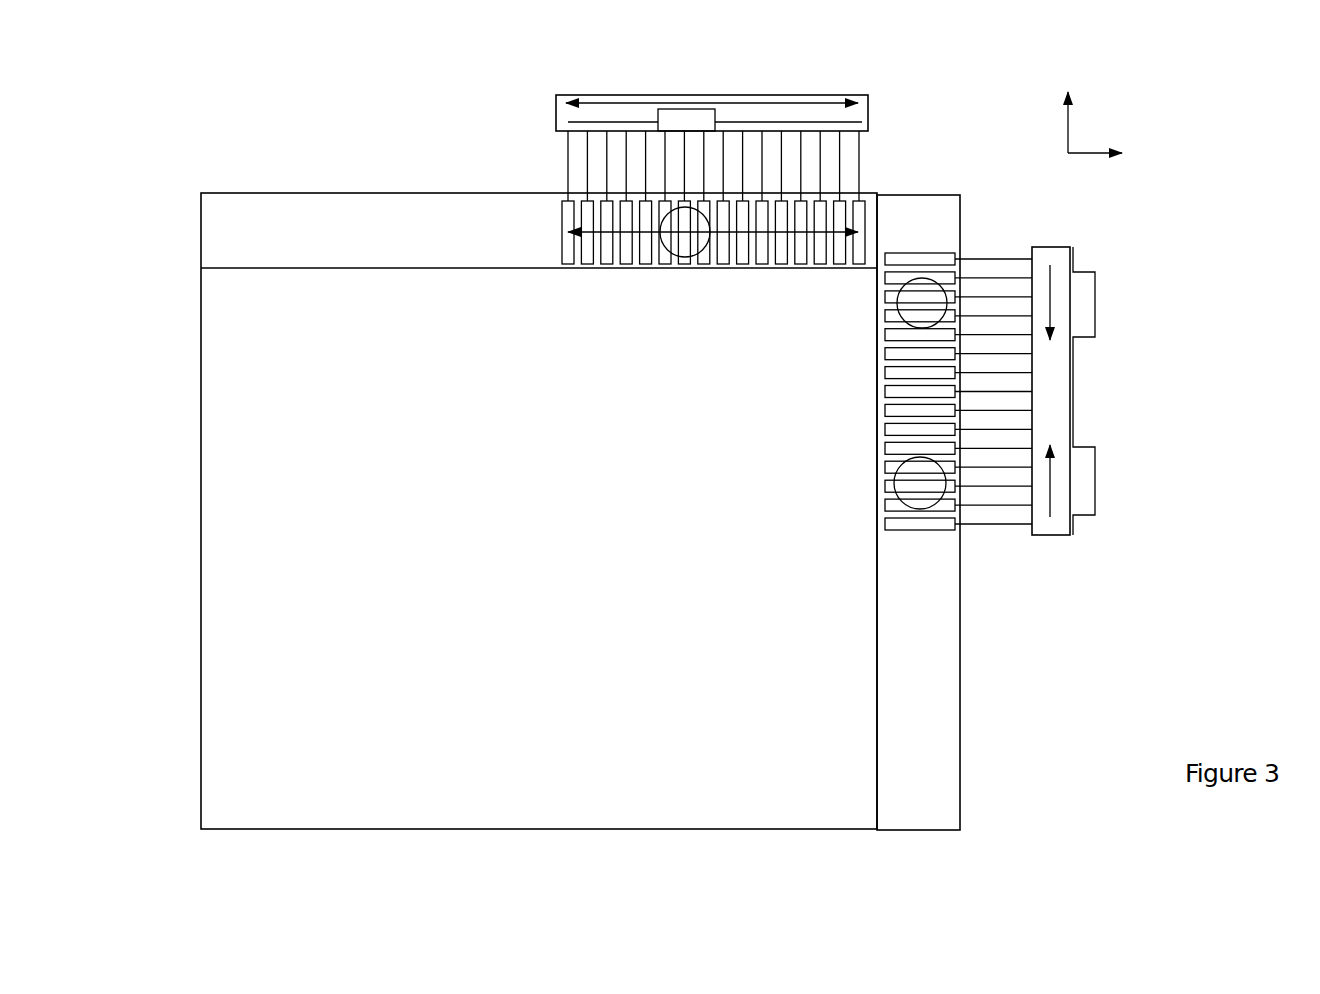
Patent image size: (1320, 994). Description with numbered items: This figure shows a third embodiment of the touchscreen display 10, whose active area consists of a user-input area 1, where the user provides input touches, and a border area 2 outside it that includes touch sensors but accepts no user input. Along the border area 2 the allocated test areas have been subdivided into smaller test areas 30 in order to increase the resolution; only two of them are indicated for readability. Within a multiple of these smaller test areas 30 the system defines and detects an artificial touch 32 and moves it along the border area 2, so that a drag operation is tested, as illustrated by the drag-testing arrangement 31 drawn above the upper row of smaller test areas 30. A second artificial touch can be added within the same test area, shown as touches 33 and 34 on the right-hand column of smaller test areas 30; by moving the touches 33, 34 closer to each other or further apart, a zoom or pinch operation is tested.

The user-input area 1 is at (248, 285).
The border area 2 is at (333, 205).
The touchscreen display 10 is at (375, 105).
The smaller test areas 30 is at (843, 207).
The drag testing module 31 is at (795, 115).
The artificial touch 32 is at (677, 223).
The touch 33 is at (917, 283).
The touch 34 is at (918, 505).